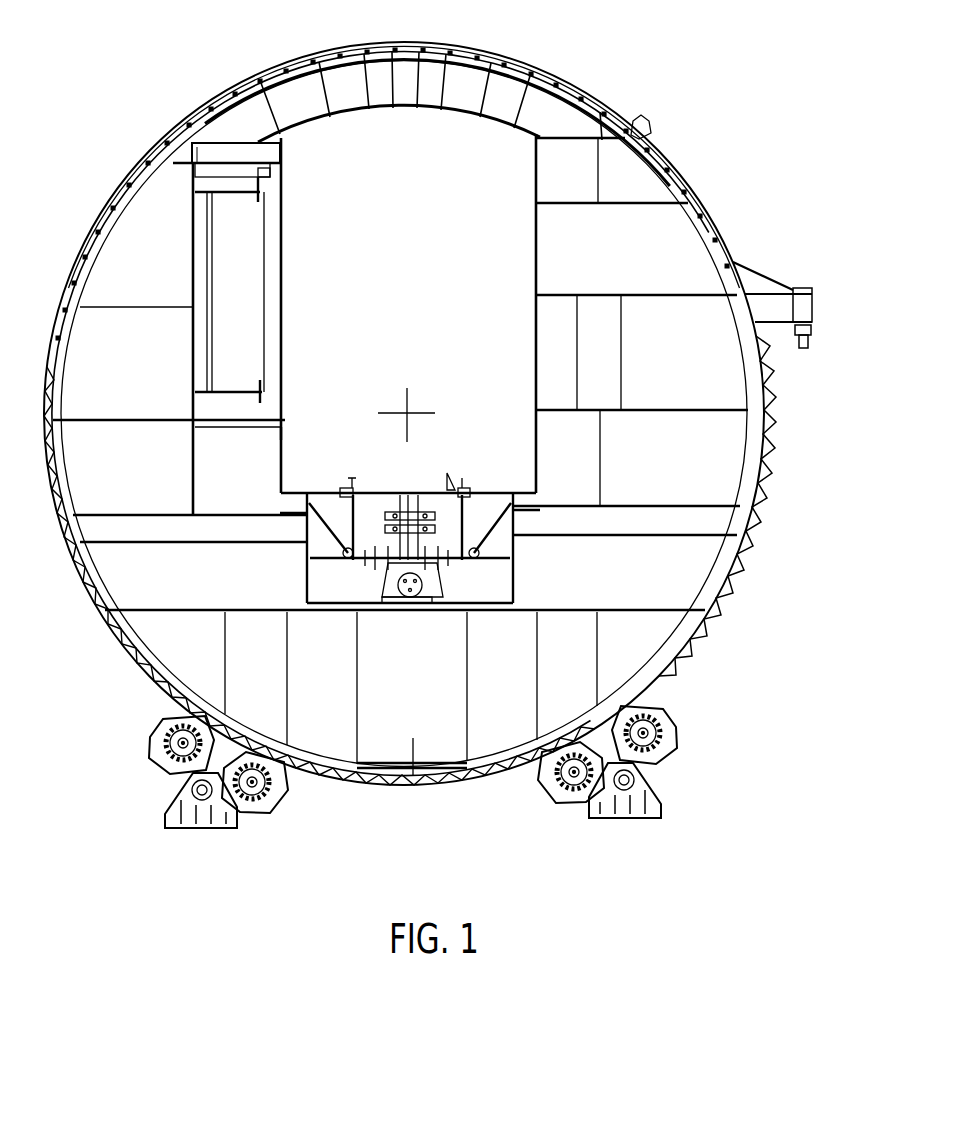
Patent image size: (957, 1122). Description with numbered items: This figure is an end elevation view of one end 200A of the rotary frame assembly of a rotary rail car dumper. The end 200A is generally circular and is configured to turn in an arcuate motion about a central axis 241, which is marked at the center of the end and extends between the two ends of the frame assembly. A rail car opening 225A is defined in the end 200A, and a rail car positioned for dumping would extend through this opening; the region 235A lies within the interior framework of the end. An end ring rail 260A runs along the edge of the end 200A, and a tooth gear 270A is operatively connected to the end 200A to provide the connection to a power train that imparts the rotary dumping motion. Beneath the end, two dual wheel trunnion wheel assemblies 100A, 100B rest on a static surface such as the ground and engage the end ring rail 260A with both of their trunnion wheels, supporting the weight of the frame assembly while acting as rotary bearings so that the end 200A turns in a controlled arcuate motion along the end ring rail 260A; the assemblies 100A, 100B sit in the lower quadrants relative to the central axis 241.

The trunnion wheel assembly 100A is at (148, 771).
The trunnion wheel assembly 100B is at (676, 764).
The end 200A is at (710, 208).
The rail car opening 225A is at (283, 203).
The central compartment 235A is at (457, 307).
The central axis 241 is at (412, 418).
The end ring rail 260A is at (550, 73).
The tooth gear 270A is at (735, 590).